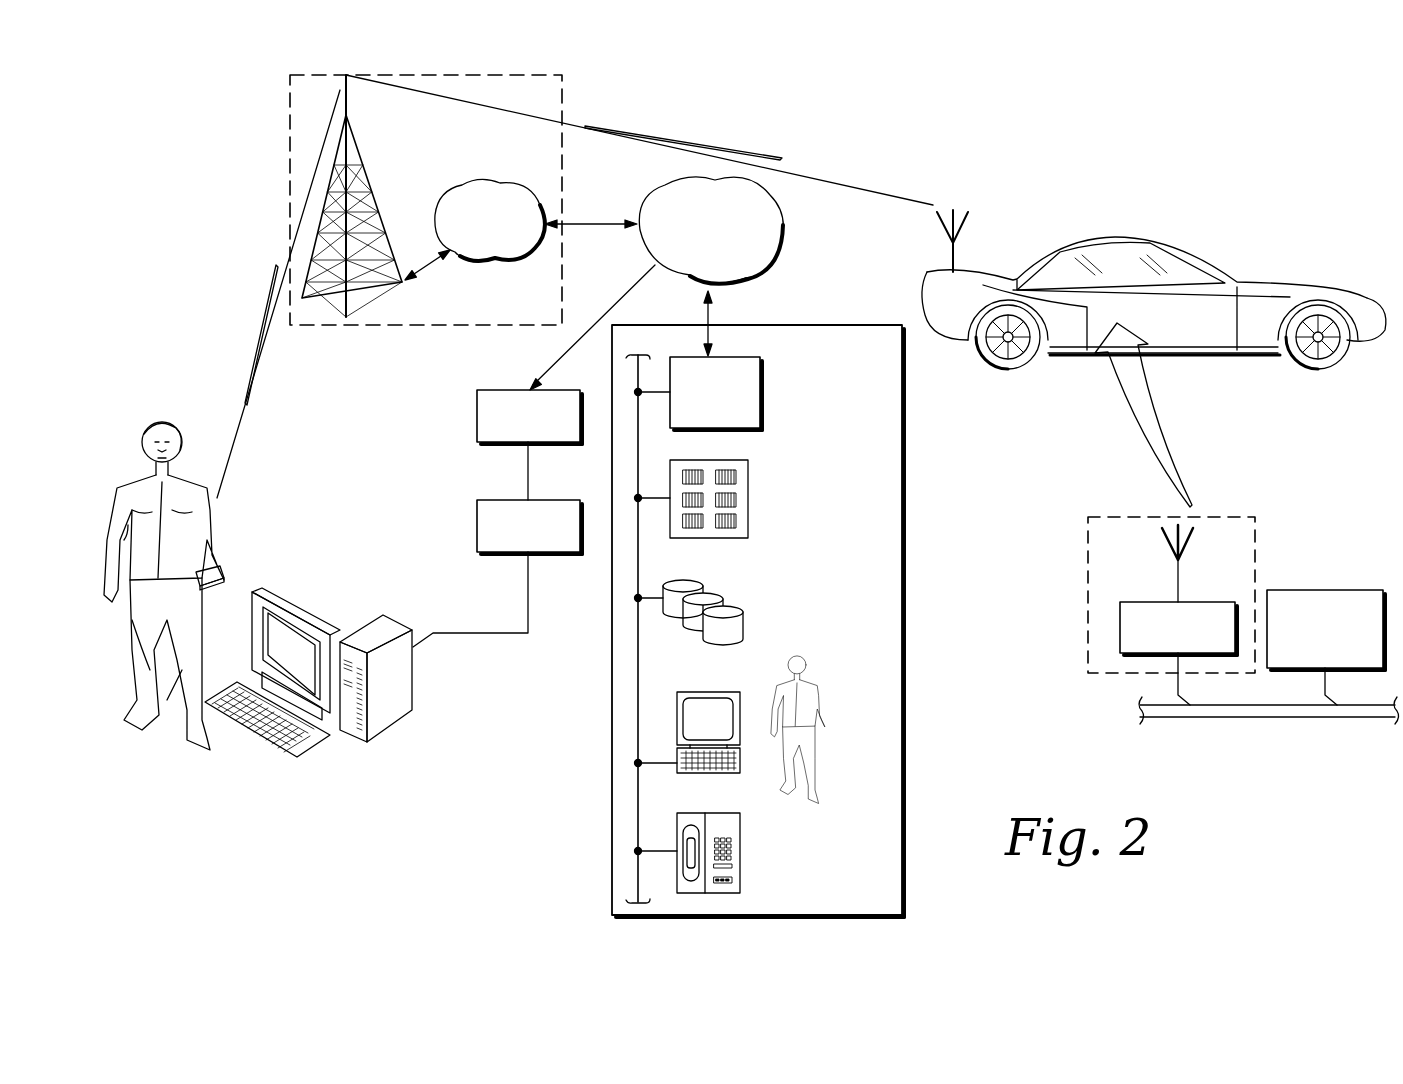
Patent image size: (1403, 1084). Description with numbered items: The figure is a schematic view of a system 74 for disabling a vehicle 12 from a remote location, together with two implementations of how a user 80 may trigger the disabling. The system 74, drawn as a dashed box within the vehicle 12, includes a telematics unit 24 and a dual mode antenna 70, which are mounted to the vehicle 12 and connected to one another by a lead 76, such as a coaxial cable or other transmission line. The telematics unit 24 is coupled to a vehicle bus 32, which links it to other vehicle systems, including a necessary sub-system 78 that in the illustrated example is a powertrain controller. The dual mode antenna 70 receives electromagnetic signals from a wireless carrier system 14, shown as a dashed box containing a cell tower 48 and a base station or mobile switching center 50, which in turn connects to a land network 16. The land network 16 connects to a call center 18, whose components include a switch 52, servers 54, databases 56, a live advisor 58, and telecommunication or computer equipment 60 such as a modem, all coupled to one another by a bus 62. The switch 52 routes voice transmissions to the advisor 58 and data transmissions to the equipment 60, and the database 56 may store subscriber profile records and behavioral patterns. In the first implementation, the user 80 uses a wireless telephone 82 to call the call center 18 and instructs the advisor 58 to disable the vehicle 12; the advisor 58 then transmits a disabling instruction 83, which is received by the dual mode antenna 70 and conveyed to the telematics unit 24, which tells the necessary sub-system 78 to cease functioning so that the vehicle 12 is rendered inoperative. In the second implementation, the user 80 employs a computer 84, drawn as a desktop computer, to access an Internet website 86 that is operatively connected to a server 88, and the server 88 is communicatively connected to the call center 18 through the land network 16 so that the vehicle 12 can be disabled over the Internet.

The vehicle 12 is at (1307, 290).
The wireless carrier system 14 is at (290, 163).
The land network 16 is at (770, 262).
The call center 18 is at (828, 325).
The telematics unit 24 is at (1142, 601).
The vehicle bus 32 is at (1283, 720).
The cell tower 48 is at (366, 170).
The mobile switching center 50 is at (468, 262).
The switch 52 is at (762, 393).
The server 54 is at (748, 480).
The database 56 is at (710, 590).
The advisor 58 is at (812, 688).
The telecommunication/computer equipment 60 is at (742, 850).
The bus 62 is at (640, 676).
The dual mode antenna 70 is at (968, 225).
The system for disabling a vehicle 74 is at (1270, 555).
The lead 76 is at (1180, 585).
The necessary sub-system 78 is at (1335, 590).
The user 80 is at (207, 530).
The wireless telephone 82 is at (222, 573).
The disabling instruction 83 is at (718, 148).
The computer 84 is at (386, 627).
The Internet website 86 is at (477, 530).
The server 88 is at (477, 418).